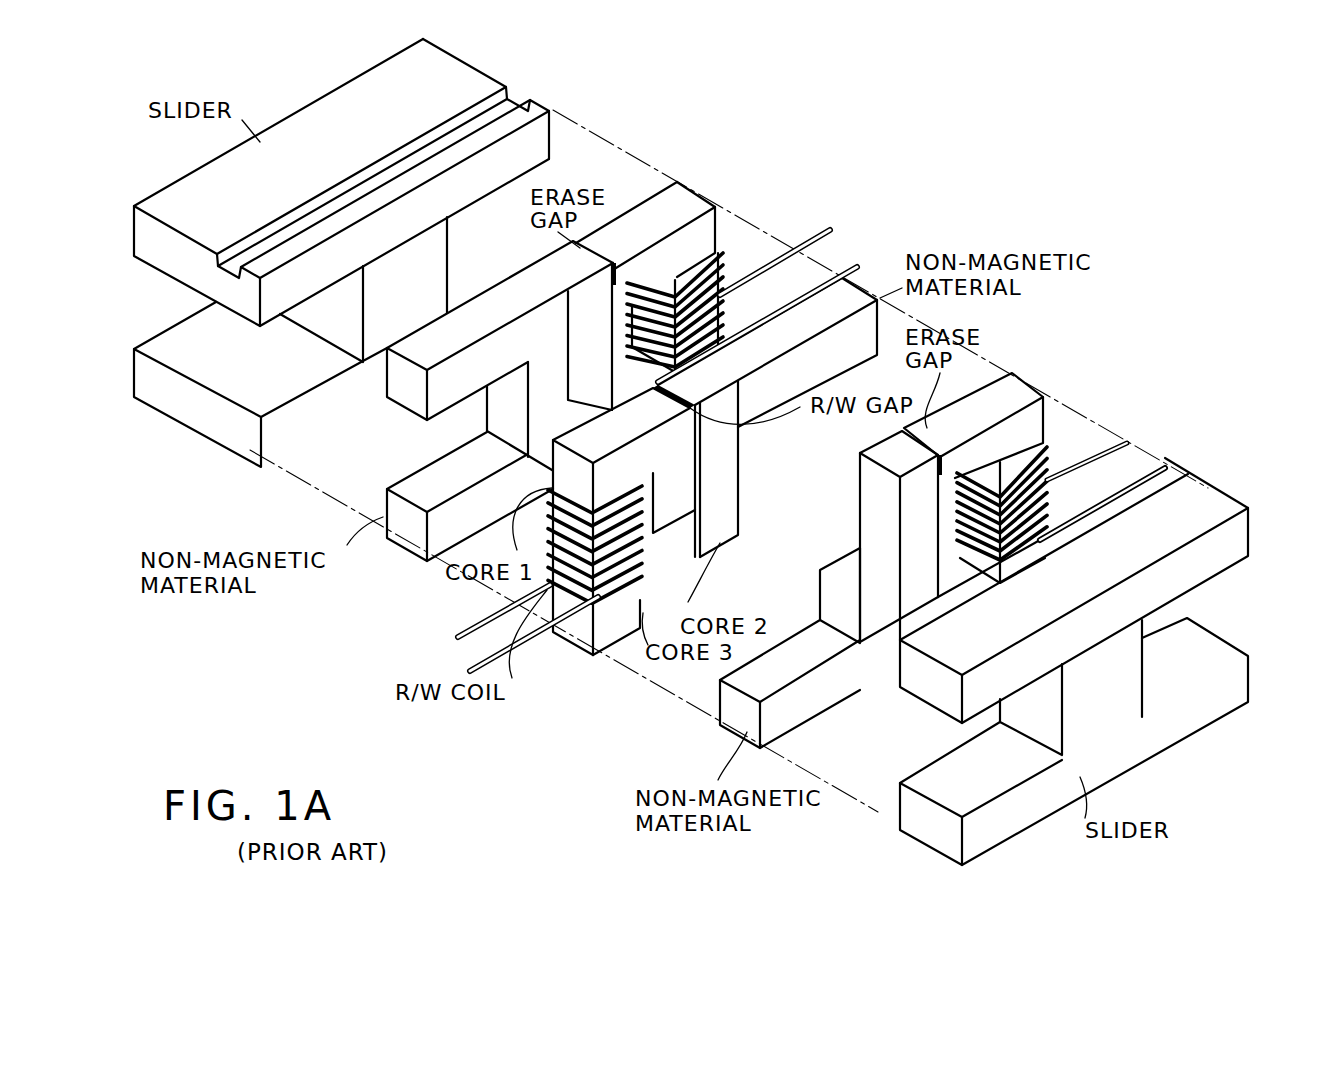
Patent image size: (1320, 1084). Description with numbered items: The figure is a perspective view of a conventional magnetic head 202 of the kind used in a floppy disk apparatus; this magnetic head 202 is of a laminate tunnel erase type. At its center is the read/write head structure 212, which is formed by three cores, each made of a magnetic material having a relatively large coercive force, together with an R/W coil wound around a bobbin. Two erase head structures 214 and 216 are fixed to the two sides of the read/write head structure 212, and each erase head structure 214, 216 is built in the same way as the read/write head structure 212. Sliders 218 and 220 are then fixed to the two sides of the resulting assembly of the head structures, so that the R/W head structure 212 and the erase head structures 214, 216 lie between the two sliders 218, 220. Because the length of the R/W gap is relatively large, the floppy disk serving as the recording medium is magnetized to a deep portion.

The slider 218 is at (482, 68).
The erase head structure 214 is at (693, 203).
The erase head structure 216 is at (1030, 383).
The slider 220 is at (1217, 490).
The read/write (R/W) head structure 212 is at (578, 655).
The magnetic head 202 is at (402, 573).